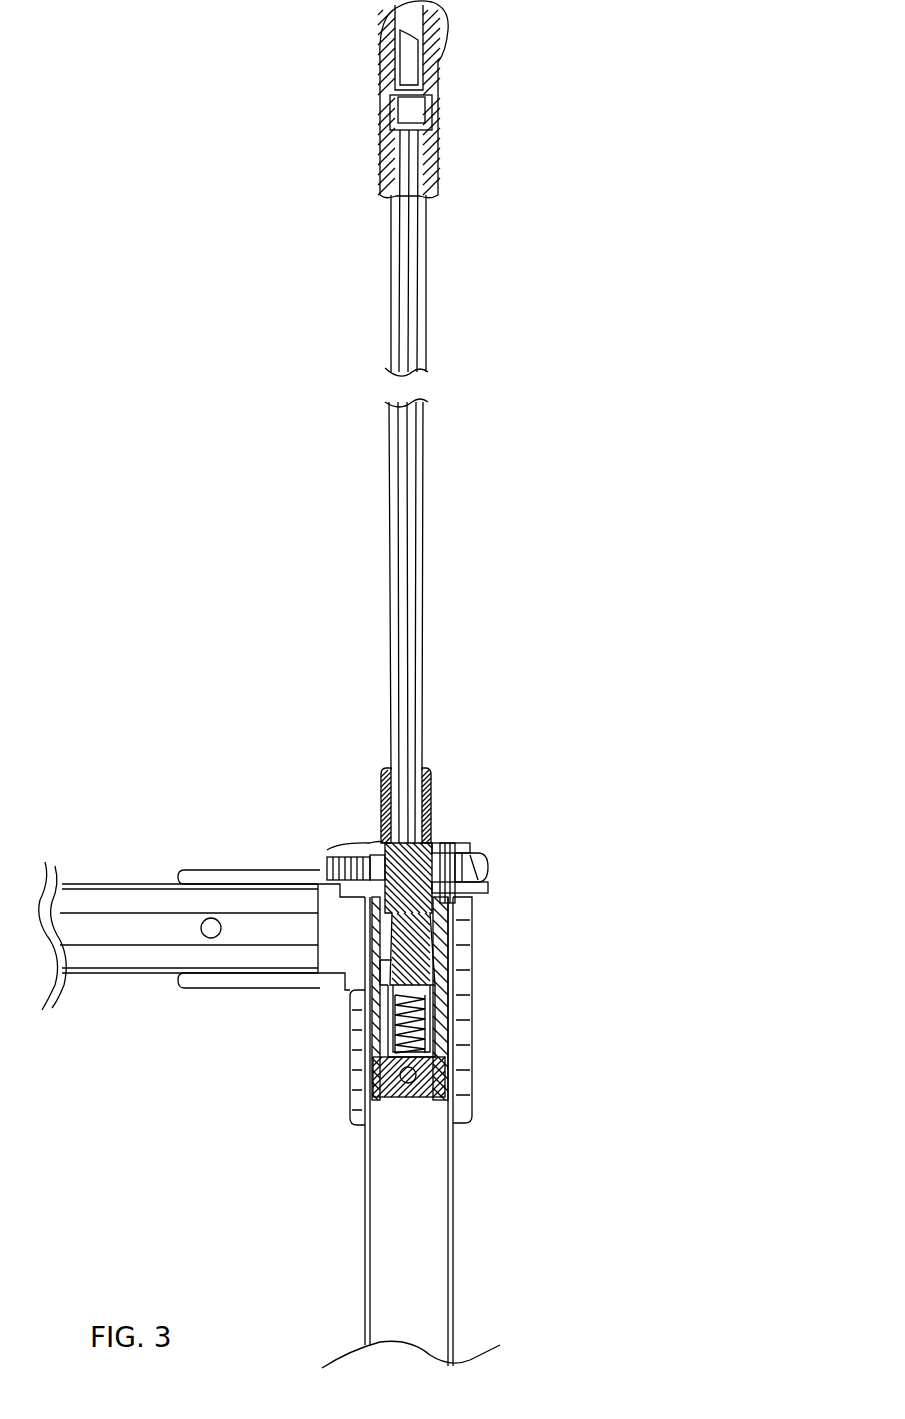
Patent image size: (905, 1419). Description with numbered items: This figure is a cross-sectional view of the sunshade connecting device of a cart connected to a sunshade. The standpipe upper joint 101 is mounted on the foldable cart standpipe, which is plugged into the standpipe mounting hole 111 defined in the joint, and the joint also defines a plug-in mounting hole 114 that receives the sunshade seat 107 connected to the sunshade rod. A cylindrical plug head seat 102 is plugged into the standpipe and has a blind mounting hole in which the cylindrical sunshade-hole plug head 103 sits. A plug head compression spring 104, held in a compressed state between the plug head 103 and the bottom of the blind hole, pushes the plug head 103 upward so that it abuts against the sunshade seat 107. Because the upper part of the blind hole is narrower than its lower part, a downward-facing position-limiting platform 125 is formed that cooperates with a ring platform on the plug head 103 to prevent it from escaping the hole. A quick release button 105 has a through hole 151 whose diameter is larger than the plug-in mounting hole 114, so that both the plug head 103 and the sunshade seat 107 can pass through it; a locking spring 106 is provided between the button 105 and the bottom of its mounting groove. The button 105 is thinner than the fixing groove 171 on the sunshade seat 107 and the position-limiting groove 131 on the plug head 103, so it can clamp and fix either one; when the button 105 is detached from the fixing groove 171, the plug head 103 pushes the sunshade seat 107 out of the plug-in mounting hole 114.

The standpipe upper joint 101 is at (453, 1028).
The plug head seat 102 is at (455, 1083).
The sunshade-hole plug head 103 is at (453, 972).
The plug head compression spring 104 is at (383, 1005).
The quick release button 105 is at (495, 868).
The locking spring 106 is at (322, 868).
The sunshade seat 107 is at (432, 805).
The standpipe mounting hole 111 is at (350, 1097).
The plug-in mounting hole 114 is at (470, 893).
The position-limiting platform 125 is at (440, 962).
The position-limiting groove 131 is at (368, 970).
The through hole 151 is at (467, 843).
The fixing groove 171 is at (375, 845).